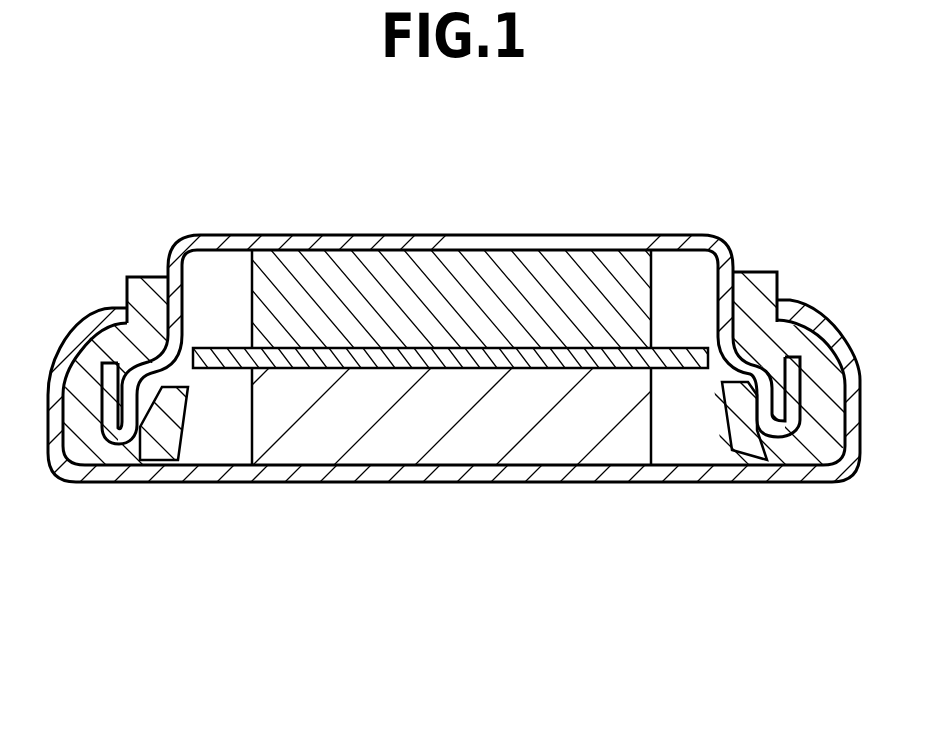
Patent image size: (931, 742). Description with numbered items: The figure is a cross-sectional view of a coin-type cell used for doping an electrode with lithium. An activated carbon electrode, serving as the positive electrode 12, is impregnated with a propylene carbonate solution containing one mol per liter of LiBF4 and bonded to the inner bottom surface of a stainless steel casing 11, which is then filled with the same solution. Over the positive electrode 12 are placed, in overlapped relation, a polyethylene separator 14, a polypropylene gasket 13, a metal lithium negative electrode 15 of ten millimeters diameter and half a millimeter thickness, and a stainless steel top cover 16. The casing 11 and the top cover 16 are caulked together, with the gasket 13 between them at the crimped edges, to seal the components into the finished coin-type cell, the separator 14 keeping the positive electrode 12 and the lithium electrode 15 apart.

The stainless steel casing 11 is at (510, 468).
The positive electrode 12 is at (322, 437).
The polypropylene gasket 13 is at (147, 292).
The polyethylene separator 14 is at (690, 340).
The positive electrode 15 is at (495, 270).
The stainless steel top cover 16 is at (343, 236).